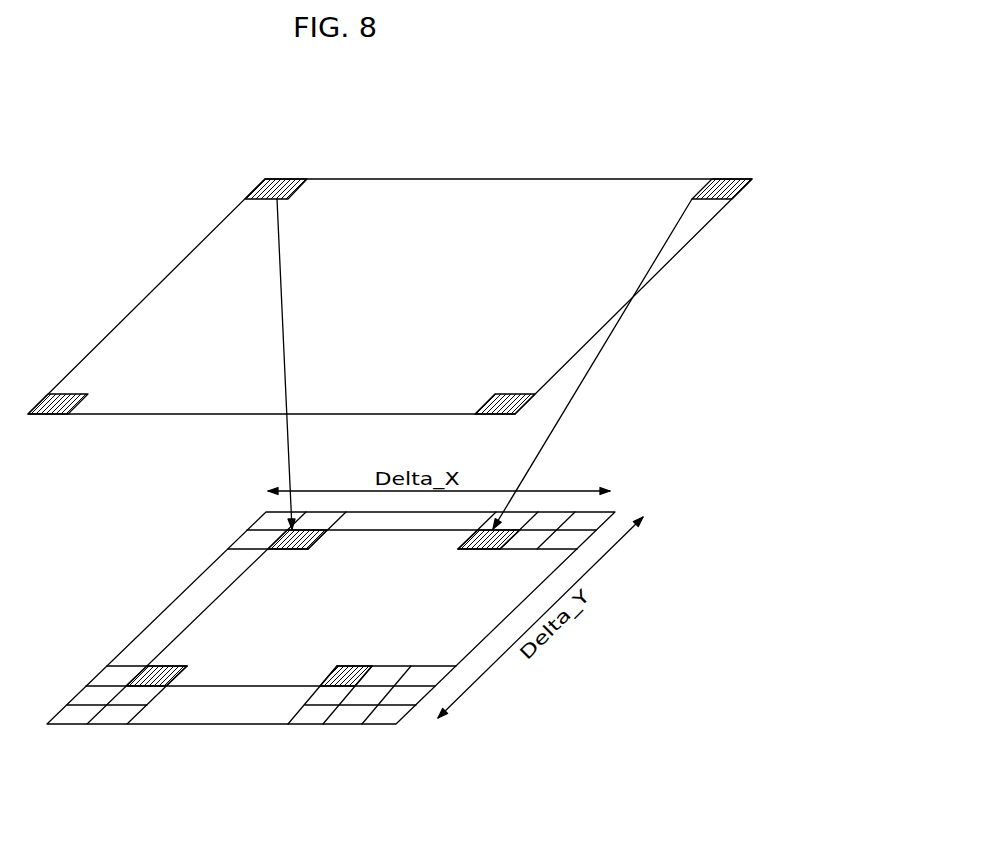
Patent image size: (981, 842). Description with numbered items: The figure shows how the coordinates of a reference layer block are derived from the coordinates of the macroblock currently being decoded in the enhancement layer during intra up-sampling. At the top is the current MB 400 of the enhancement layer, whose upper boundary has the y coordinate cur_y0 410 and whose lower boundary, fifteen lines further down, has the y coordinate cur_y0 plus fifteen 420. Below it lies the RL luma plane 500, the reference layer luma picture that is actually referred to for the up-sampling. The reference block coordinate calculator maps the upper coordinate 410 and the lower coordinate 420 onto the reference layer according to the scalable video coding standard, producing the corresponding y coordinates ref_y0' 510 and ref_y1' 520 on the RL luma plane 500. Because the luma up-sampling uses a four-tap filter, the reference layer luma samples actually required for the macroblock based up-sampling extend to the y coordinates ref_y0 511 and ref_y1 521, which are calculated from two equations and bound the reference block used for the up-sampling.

The current MB of the EL 400 is at (628, 179).
The y coordinate cur_y0 410 is at (283, 182).
The y coordinate cur_y0+15 420 is at (503, 400).
The RL luma plane 500 is at (613, 511).
The y coordinate ref_y0' 510 is at (279, 543).
The y coordinate ref_y0 511 is at (268, 512).
The y coordinate ref_y1' 520 is at (343, 670).
The y coordinate ref_y1 521 is at (388, 724).